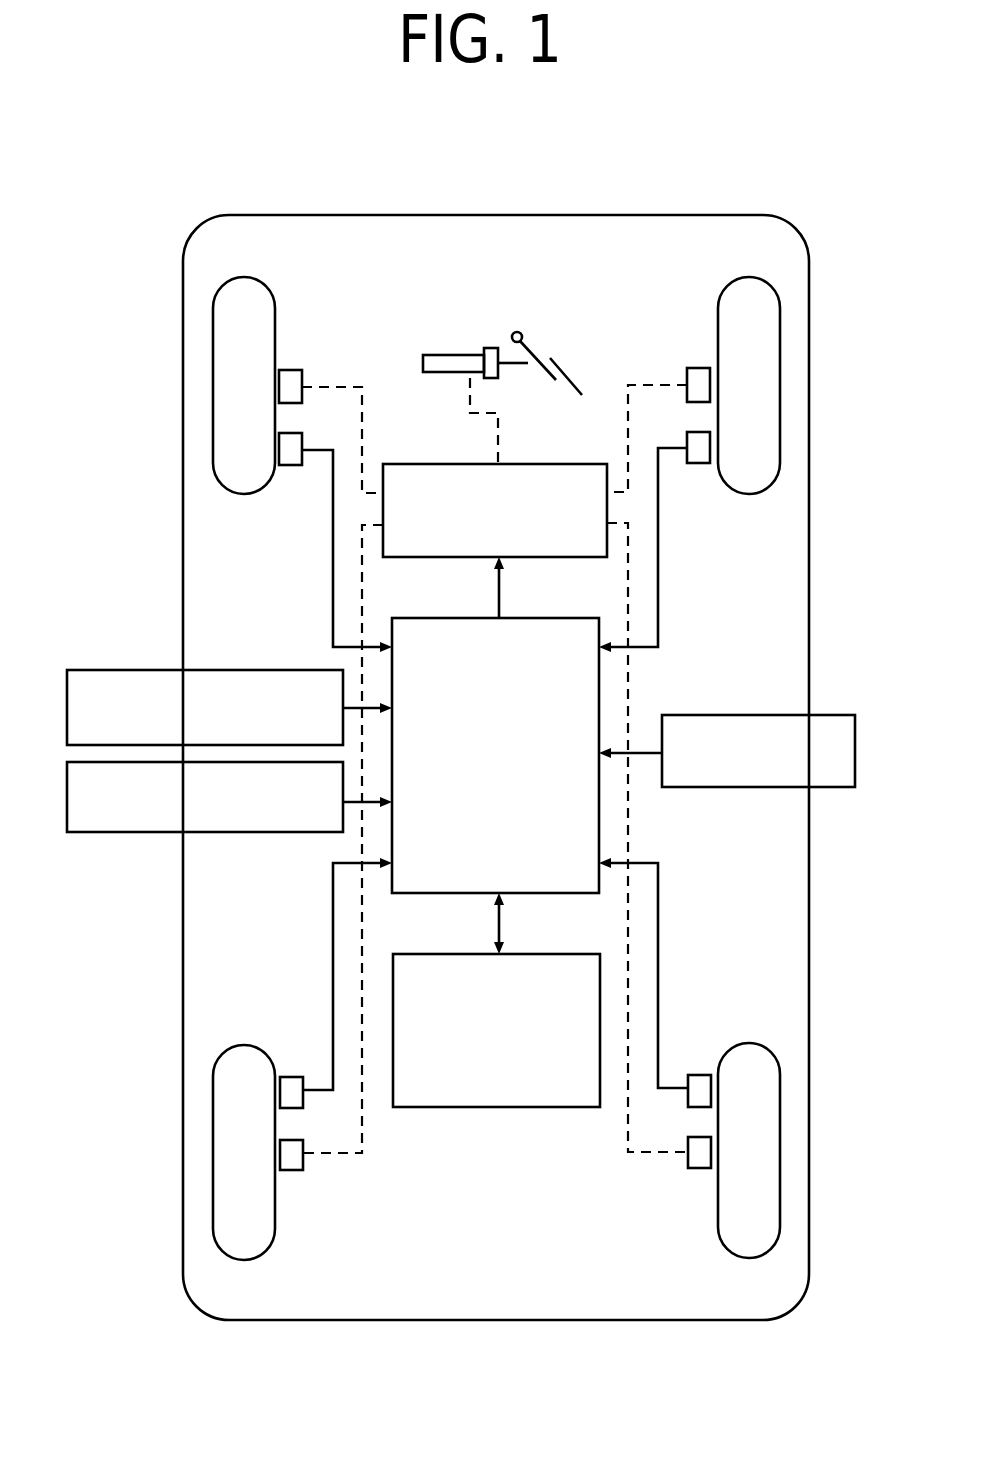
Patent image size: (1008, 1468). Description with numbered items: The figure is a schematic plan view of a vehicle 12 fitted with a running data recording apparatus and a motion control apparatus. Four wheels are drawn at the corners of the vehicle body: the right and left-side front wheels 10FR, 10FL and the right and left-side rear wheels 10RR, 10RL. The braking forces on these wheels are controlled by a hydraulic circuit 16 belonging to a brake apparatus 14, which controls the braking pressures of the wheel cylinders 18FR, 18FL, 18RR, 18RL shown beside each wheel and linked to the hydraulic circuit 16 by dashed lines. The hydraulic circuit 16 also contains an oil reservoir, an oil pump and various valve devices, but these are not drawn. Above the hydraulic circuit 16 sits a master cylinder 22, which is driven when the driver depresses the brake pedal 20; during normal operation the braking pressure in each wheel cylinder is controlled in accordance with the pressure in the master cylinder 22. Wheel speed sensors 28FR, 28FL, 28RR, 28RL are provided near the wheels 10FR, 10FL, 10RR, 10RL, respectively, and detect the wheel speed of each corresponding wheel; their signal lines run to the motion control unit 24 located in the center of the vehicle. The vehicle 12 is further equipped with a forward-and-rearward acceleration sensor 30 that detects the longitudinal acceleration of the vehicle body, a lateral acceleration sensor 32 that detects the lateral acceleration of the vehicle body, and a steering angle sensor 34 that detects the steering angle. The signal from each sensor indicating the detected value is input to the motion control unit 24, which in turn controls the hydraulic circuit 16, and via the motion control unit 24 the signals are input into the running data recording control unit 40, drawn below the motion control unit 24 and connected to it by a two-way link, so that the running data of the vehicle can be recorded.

The left-side front wheel 10FL is at (213, 402).
The right-side front wheel 10FR is at (780, 405).
The left-side rear wheel 10RL is at (213, 1168).
The right-side rear wheel 10RR is at (780, 1168).
The vehicle 12 is at (812, 545).
The brake apparatus 14 is at (543, 296).
The hydraulic circuit 16 is at (521, 504).
The wheel cylinder 18FL is at (288, 383).
The wheel cylinder 18FR is at (702, 382).
The wheel cylinder 18RL is at (292, 1170).
The wheel cylinder 18RR is at (702, 1168).
The brake pedal 20 is at (560, 370).
The master cylinder 22 is at (455, 353).
The motion control unit 24 is at (528, 821).
The wheel speed sensor 28FL is at (288, 458).
The wheel speed sensor 28FR is at (697, 462).
The wheel speed sensor 28RL is at (290, 1077).
The wheel speed sensor 28RR is at (700, 1075).
The forward-and-rearward acceleration sensor 30 is at (243, 670).
The lateral acceleration sensor 32 is at (240, 832).
The steering angle sensor 34 is at (753, 715).
The running data recording control unit 40 is at (518, 1083).